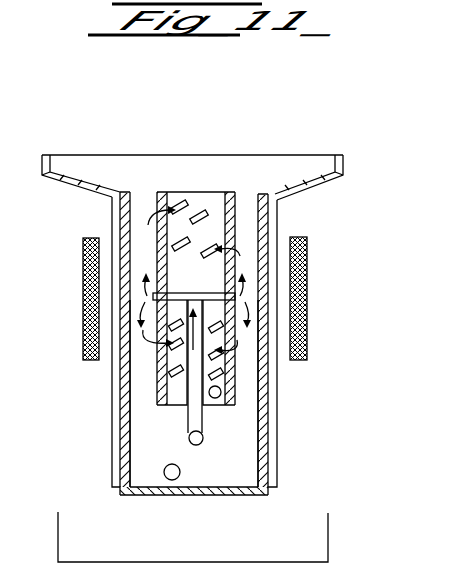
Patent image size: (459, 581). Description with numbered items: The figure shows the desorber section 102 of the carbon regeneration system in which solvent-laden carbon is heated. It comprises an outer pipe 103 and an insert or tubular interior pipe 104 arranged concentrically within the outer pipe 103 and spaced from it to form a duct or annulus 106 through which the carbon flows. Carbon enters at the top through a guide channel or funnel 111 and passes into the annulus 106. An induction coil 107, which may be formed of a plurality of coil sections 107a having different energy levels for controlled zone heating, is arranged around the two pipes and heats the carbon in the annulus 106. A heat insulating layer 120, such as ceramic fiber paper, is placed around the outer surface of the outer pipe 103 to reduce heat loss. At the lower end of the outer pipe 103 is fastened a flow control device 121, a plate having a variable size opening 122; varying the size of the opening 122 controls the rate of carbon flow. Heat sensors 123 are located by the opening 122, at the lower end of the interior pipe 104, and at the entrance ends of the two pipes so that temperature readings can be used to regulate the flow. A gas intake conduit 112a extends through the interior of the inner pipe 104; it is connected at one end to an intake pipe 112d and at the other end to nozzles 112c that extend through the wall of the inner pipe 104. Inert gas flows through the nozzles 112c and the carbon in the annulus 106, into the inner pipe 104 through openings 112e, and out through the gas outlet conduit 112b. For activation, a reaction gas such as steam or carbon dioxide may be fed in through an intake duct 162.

The desorber section 102 is at (99, 126).
The guide channel or funnel 111 is at (328, 154).
The insert or tubular interior pipe 104 is at (236, 194).
The outer pipe 103 is at (265, 222).
The duct or annulus 106 is at (242, 237).
The induction coil 107 is at (76, 264).
The coil sections 107a is at (307, 260).
The heat sensors 123 is at (140, 202).
The openings 112e is at (199, 212).
The nozzles 112c is at (231, 294).
The gas intake conduit 112a is at (188, 414).
The gas outlet conduit 112b is at (220, 400).
The intake pipe 112d is at (200, 446).
The intake duct 162 is at (164, 471).
The heat insulating layer 120 is at (278, 462).
The flow control device 121 is at (240, 496).
The variable size opening 122 is at (190, 489).